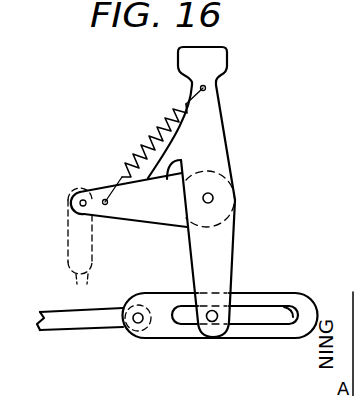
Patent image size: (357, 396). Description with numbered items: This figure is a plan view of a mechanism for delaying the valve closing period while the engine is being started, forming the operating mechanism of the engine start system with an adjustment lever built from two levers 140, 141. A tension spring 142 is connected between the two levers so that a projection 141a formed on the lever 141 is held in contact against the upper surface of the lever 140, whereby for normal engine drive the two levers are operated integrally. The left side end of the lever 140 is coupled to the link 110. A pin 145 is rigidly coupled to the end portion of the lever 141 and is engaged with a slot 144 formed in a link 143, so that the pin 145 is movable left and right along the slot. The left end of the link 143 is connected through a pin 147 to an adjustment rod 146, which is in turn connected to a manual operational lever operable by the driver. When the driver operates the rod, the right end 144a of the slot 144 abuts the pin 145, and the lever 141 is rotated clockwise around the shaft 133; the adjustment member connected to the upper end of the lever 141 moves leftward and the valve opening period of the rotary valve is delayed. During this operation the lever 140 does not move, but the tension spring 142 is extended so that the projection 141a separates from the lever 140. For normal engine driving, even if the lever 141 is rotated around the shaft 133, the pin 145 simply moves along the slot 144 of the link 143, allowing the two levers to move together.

The link 110 is at (80, 186).
The shaft 133 is at (214, 196).
The lever 140 is at (143, 207).
The lever 141 is at (218, 136).
The projection 141a is at (155, 152).
The tension spring 142 is at (165, 118).
The link 143 is at (295, 326).
The slot 144 is at (249, 321).
The right end of the slot 144a is at (286, 305).
The pin 145 is at (212, 322).
The adjustment rod 146 is at (69, 318).
The pin 147 is at (137, 325).